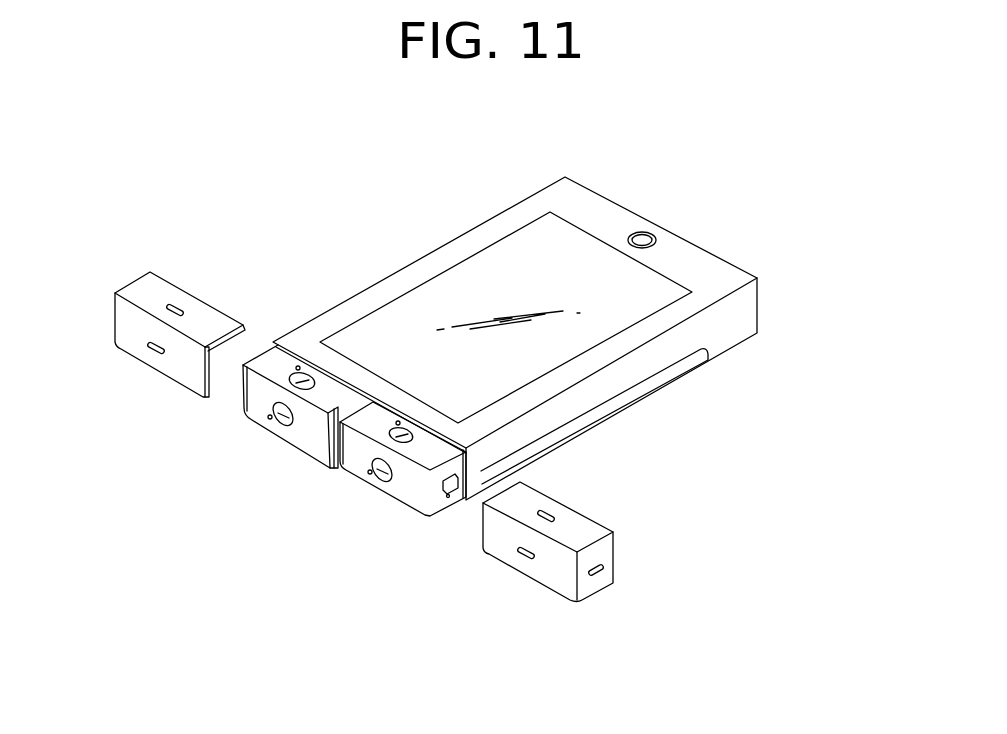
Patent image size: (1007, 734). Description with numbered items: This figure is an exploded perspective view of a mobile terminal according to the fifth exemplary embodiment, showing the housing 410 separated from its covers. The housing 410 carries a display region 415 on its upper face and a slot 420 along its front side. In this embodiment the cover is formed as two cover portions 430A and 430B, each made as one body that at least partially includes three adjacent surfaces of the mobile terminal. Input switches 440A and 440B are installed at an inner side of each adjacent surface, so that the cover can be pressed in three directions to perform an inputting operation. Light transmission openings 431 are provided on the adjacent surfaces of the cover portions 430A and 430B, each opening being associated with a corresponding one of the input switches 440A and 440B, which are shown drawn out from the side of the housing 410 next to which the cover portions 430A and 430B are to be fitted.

The mobile terminal body 410 is at (542, 299).
The display unit 415 is at (510, 260).
The slot 420 is at (722, 338).
The cover portion 430A is at (583, 518).
The cover portion 430B is at (178, 295).
The light transmission openings 431 is at (168, 313).
The input switch 440A is at (402, 451).
The input switch 440B is at (305, 393).